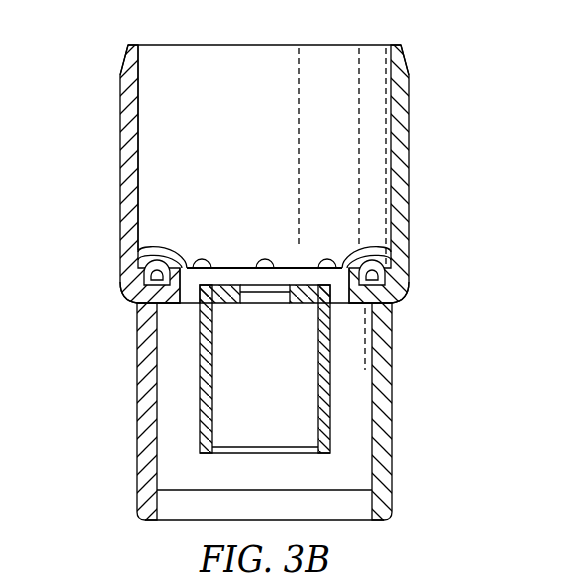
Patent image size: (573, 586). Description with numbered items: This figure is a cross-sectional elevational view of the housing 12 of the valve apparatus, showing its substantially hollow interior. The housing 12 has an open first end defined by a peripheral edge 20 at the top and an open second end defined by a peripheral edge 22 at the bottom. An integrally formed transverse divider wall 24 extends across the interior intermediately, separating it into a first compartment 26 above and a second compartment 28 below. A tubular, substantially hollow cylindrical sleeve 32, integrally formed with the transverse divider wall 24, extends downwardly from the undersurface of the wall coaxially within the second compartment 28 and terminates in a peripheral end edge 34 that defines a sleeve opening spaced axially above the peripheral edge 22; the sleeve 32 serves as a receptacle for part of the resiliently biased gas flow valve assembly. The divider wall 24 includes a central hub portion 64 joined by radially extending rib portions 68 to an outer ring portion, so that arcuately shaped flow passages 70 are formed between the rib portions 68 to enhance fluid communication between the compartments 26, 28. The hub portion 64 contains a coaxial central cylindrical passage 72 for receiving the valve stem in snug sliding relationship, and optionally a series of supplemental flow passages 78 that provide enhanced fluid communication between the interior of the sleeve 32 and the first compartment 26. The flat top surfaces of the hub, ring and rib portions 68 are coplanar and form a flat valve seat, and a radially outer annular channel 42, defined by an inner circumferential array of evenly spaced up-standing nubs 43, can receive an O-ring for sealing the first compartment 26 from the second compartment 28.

The housing 12 is at (410, 160).
The peripheral edge 20 is at (404, 47).
The peripheral edge 22 is at (393, 515).
The transverse divider wall 24 is at (411, 282).
The first compartment 26 is at (157, 134).
The second compartment 28 is at (175, 443).
The sleeve 32 is at (332, 370).
The peripheral end edge 34 is at (337, 452).
The annular channel 42 is at (140, 295).
The nubs 43 is at (150, 272).
The central hub portion 64 is at (288, 268).
The rib portions 68 is at (187, 307).
The flow passages 70 is at (150, 260).
The cylindrical passage 72 is at (250, 305).
The supplemental flow passages 78 is at (220, 268).